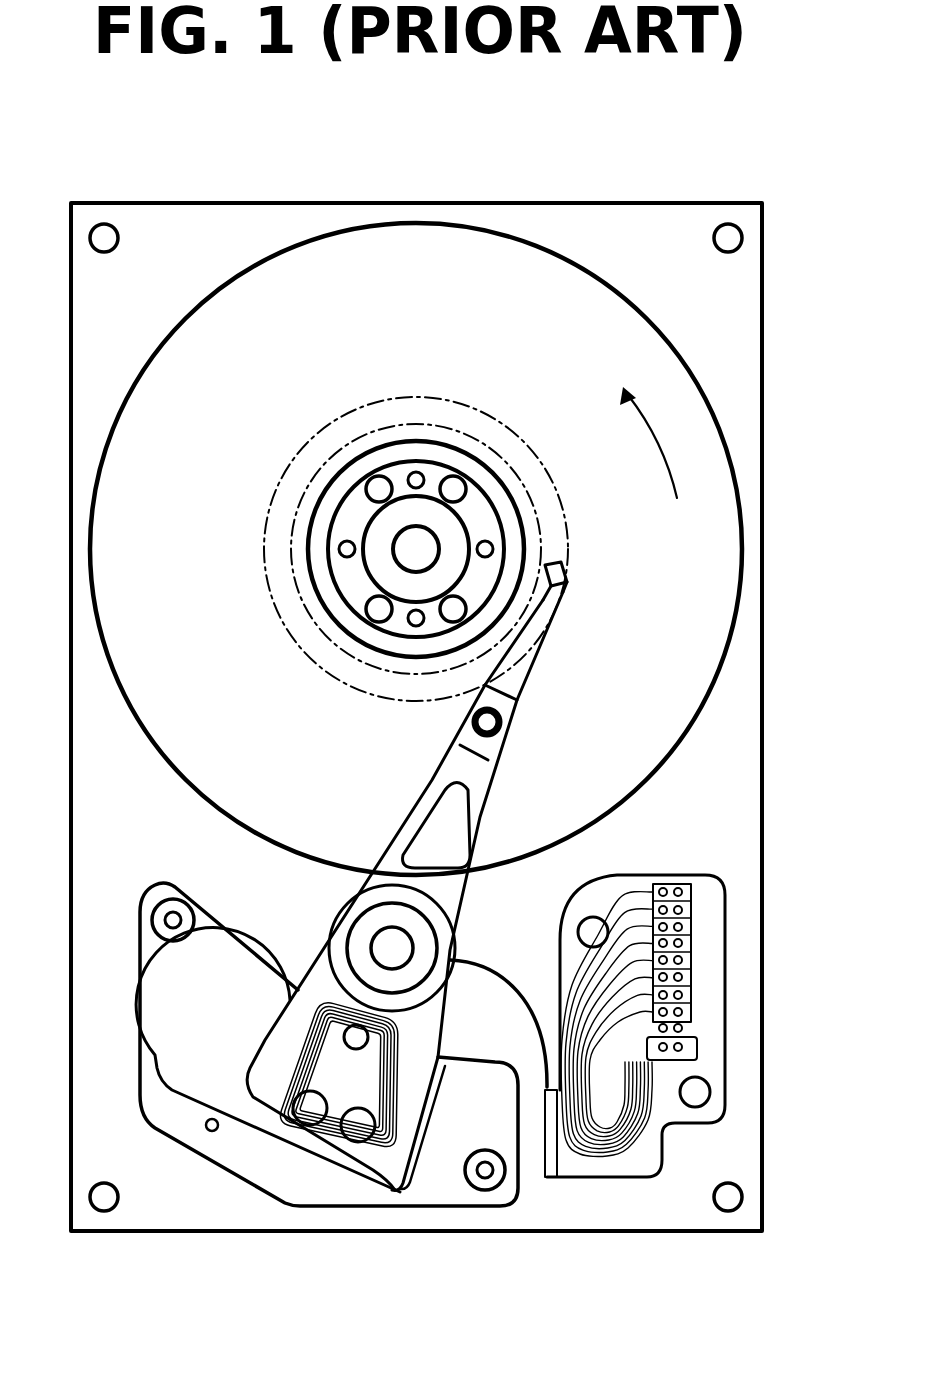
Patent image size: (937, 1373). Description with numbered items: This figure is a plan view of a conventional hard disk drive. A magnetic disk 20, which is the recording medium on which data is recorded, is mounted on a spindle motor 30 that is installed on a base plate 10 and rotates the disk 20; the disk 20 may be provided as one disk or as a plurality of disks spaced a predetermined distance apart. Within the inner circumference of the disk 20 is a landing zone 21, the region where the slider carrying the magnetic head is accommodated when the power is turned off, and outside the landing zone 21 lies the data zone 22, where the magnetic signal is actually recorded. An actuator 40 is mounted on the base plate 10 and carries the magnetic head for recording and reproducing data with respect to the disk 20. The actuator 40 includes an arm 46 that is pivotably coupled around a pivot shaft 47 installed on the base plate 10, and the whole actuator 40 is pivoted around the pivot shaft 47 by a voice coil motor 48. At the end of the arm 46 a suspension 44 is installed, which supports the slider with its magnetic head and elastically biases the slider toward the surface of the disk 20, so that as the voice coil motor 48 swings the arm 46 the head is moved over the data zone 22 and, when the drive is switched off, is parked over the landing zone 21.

The base plate 10 is at (742, 336).
The magnetic disk 20 is at (722, 546).
The landing zone 21 is at (310, 550).
The data zone 22 is at (263, 550).
The spindle motor 30 is at (428, 507).
The actuator 40 is at (420, 876).
The suspension 44 is at (515, 678).
The arm 46 is at (445, 782).
The pivot shaft 47 is at (388, 946).
The voice coil motor 48 is at (175, 1104).